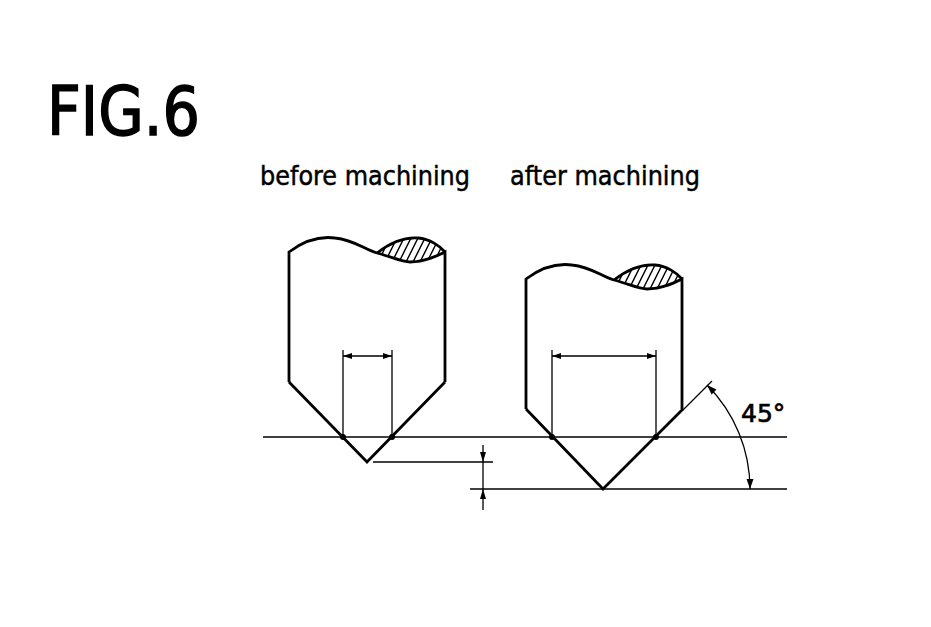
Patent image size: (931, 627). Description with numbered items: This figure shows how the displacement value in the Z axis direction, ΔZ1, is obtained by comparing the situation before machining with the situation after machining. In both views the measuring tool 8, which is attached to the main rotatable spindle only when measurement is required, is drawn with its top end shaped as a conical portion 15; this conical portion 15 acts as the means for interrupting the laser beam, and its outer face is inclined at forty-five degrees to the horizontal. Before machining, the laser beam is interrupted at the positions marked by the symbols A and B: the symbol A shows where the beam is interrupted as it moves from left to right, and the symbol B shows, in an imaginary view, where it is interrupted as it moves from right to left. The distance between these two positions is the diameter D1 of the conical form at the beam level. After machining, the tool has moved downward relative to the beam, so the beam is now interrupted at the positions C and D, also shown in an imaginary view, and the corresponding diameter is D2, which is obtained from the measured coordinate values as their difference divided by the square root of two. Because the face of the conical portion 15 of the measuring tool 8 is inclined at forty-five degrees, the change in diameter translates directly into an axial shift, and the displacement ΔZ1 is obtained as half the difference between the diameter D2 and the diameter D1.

The measuring tool 8 is at (289, 302).
The conical portion 15 is at (308, 402).
The position of interruption before machining A is at (343, 438).
The position of interruption before machining B is at (392, 439).
The position of interruption after machining C is at (553, 436).
The position of interruption after machining D is at (657, 439).
The inner diameter of conical form before machining D1 is at (367, 380).
The inner diameter of conical form after machining D2 is at (604, 381).
The displacement value in Z axis direction Z1 is at (512, 477).